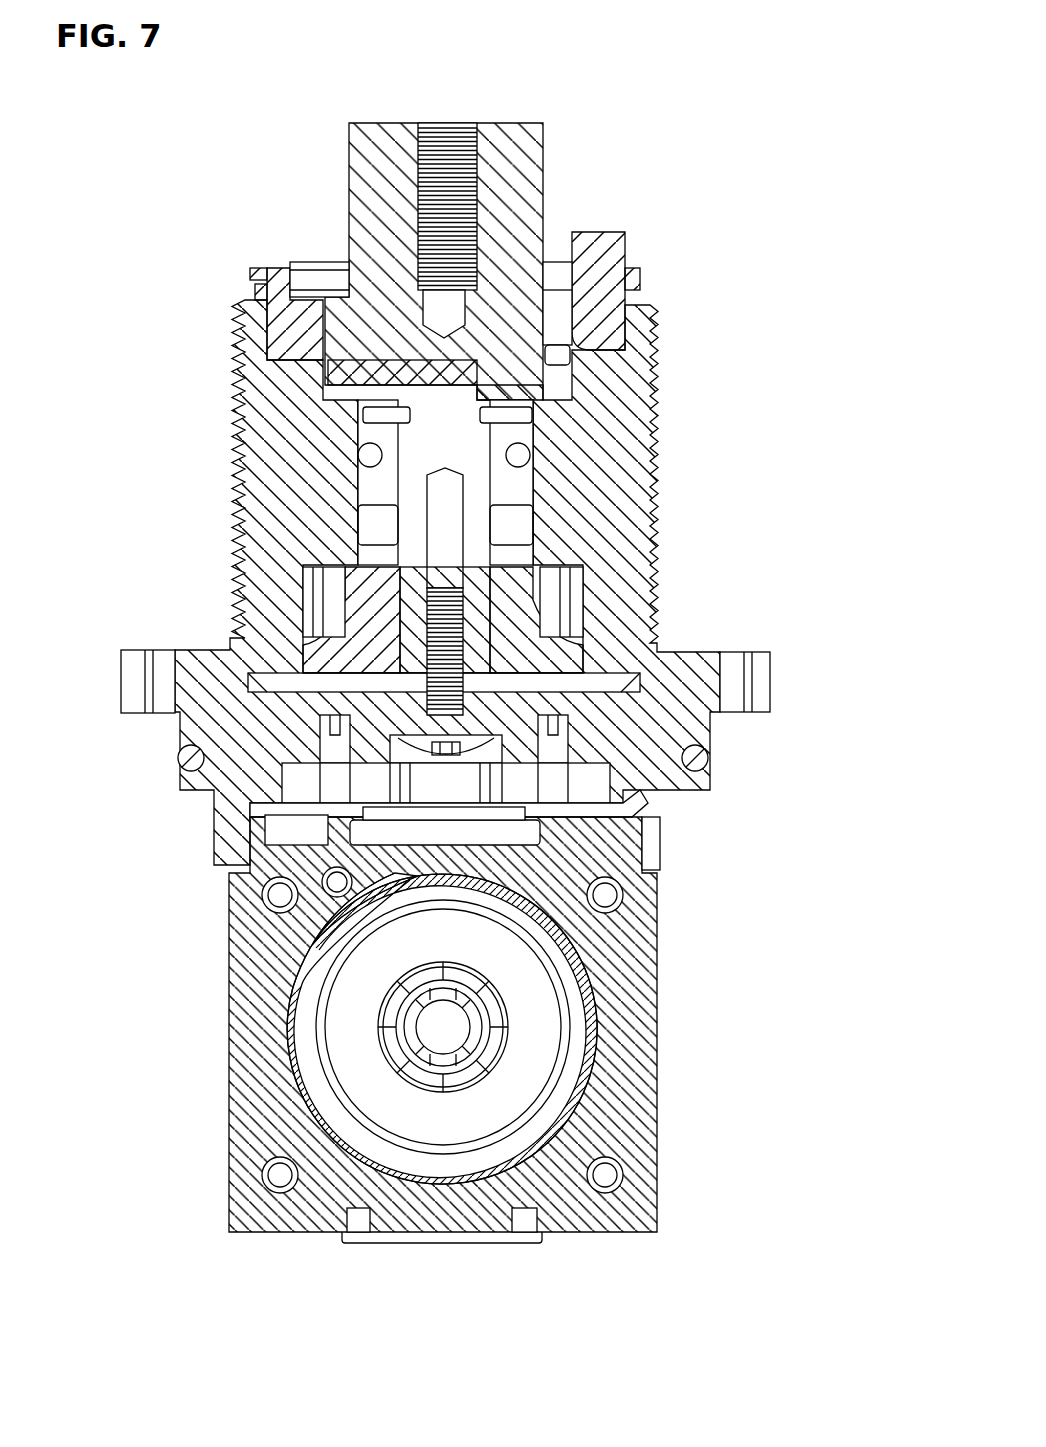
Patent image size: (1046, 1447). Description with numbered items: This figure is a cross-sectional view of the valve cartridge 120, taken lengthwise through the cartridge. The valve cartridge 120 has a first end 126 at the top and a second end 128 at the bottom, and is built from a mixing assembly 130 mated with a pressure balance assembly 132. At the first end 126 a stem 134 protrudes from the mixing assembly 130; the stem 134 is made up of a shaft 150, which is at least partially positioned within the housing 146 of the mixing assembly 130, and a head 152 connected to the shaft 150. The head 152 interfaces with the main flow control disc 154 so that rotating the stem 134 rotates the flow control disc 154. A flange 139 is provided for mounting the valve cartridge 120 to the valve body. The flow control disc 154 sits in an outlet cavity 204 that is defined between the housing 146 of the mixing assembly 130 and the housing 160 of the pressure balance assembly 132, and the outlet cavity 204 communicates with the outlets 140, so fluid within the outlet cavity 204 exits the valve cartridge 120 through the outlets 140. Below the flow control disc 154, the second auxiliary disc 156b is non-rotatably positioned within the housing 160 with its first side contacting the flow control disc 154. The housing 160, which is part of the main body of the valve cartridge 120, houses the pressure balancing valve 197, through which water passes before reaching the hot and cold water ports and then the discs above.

The valve cartridge 120 is at (745, 158).
The first end 126 is at (164, 184).
The second end 128 is at (412, 1293).
The mixing assembly 130 is at (730, 360).
The pressure balance assembly 132 is at (740, 1020).
The stem 134 is at (546, 148).
The flange 139 is at (738, 668).
The outlets 140 is at (692, 808).
The housing 146 is at (607, 520).
The shaft 150 is at (462, 442).
The head 152 is at (530, 660).
The main flow control disc 154 is at (302, 783).
The second auxiliary disc 156b is at (412, 813).
The housing 160 is at (655, 978).
The pressure balancing valve 197 is at (380, 1090).
The outlet cavity 204 is at (317, 833).